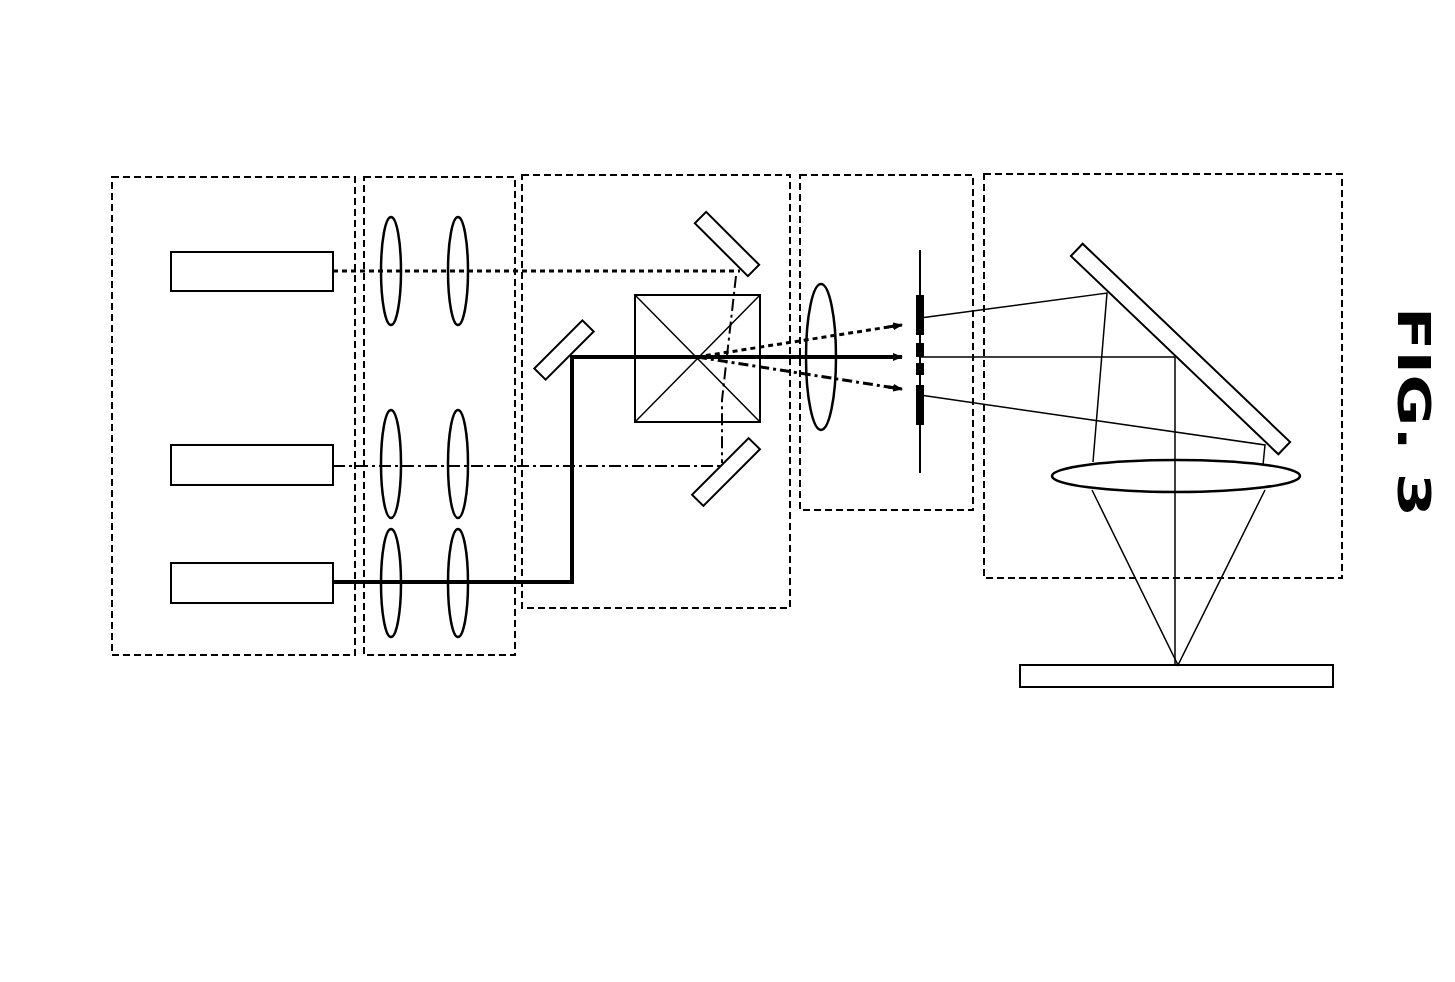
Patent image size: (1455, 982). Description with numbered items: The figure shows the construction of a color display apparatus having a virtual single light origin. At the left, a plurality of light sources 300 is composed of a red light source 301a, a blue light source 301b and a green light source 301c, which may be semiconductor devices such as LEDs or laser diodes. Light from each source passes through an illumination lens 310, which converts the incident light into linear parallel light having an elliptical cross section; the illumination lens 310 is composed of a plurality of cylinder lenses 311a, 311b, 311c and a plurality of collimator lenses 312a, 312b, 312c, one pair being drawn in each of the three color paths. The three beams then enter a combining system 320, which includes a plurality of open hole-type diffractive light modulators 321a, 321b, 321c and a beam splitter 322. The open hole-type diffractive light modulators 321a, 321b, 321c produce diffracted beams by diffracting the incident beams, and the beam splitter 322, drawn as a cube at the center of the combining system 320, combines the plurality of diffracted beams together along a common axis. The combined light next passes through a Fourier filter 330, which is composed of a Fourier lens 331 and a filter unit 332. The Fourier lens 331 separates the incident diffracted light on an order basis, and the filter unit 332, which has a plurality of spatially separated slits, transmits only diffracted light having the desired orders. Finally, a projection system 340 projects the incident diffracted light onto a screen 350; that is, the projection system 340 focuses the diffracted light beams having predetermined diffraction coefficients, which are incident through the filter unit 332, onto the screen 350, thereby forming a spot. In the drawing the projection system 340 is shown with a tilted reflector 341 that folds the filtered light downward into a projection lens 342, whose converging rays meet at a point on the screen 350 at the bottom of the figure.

The plurality of light sources 300 is at (234, 177).
The red light source 301a is at (282, 252).
The blue light source 301b is at (282, 445).
The green light source 301c is at (282, 563).
The illumination lens 310 is at (438, 177).
The cylinder lens 311a is at (398, 235).
The cylinder lens 311b is at (398, 428).
The cylinder lens 311c is at (399, 562).
The collimator lens 312a is at (465, 235).
The collimator lens 312b is at (465, 428).
The collimator lens 312c is at (466, 562).
The combining system 320 is at (655, 175).
The open hole-type diffractive light modulator 321a is at (733, 233).
The open hole-type diffractive light modulator 321b is at (558, 340).
The open hole-type diffractive light modulator 321c is at (735, 488).
The beam splitter 322 is at (660, 295).
The Fourier filter 330 is at (886, 175).
The Fourier lens 331 is at (829, 285).
The filter unit 332 is at (922, 255).
The projection system 340 is at (1163, 174).
The projection system mirror 341 is at (1120, 283).
The projection lens 342 is at (1283, 487).
The screen 350 is at (1180, 690).